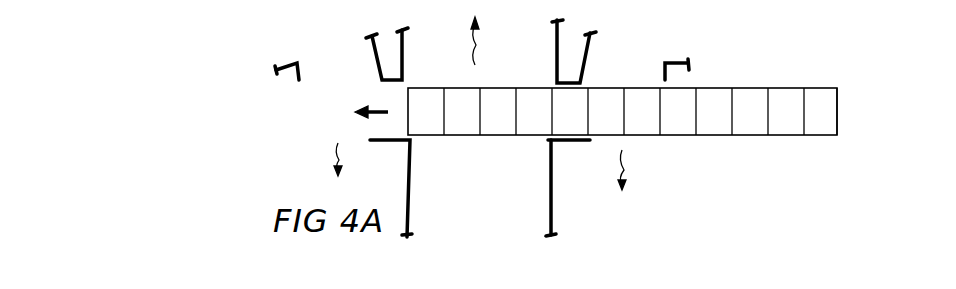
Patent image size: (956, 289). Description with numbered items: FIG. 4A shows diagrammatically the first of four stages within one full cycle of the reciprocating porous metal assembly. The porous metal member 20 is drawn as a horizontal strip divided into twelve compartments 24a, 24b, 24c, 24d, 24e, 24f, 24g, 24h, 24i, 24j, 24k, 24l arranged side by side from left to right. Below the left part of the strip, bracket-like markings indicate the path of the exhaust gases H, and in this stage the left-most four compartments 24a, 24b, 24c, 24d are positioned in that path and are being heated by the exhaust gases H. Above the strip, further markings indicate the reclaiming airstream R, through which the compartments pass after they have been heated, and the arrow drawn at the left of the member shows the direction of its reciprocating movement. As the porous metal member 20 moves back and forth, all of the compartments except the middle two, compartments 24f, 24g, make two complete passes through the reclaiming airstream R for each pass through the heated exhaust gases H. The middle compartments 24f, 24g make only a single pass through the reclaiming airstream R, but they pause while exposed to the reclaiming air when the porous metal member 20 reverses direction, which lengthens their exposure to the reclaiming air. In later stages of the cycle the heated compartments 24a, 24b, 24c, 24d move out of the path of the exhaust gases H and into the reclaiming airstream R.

The porous metal member 20 is at (718, 146).
The compartment 24a is at (428, 98).
The compartment 24b is at (460, 125).
The compartment 24c is at (503, 98).
The compartment 24d is at (533, 125).
The compartment 24e is at (567, 130).
The middle compartment 24f is at (609, 98).
The middle compartment 24g is at (645, 125).
The compartment 24h is at (678, 125).
The compartment 24i is at (718, 100).
The compartment 24j is at (751, 100).
The compartment 24k is at (788, 100).
The compartment 24l is at (822, 125).
The reclaiming airstream R is at (336, 68).
The exhaust gases H is at (475, 160).